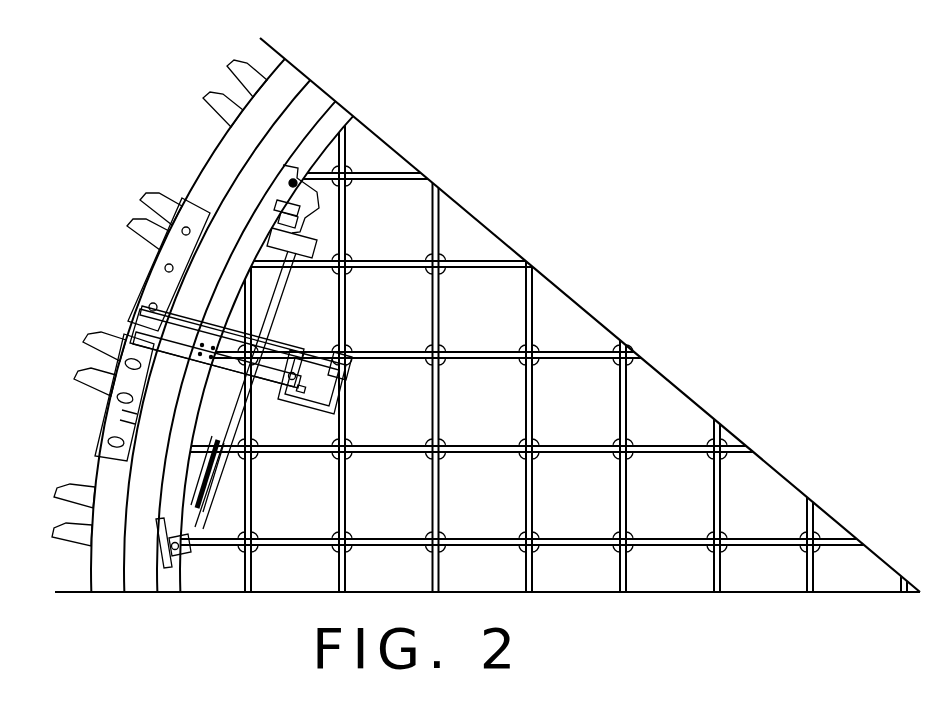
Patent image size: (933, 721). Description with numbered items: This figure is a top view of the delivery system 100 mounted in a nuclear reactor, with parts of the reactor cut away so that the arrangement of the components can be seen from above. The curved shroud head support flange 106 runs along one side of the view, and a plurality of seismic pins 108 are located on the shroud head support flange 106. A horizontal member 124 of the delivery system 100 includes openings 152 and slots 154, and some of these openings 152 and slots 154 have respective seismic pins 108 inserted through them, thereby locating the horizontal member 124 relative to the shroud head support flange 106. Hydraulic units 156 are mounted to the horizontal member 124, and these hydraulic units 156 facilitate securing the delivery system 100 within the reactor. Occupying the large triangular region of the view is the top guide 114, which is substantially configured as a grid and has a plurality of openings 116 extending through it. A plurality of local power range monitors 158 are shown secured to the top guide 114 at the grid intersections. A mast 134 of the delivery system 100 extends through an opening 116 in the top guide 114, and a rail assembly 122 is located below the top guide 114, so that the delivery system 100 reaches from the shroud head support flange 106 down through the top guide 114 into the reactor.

The delivery system 100 is at (203, 298).
The shroud head support flange 106 is at (278, 92).
The seismic pins 108 is at (148, 304).
The top guide 114 is at (586, 269).
The openings 116 is at (310, 430).
The rail assembly 122 is at (288, 281).
The horizontal member 124 is at (157, 297).
The mast 134 is at (320, 358).
The openings 152 is at (130, 238).
The slots 154 is at (108, 432).
The hydraulic units 156 is at (195, 190).
The local power range monitors (LPRMs) 158 is at (480, 326).